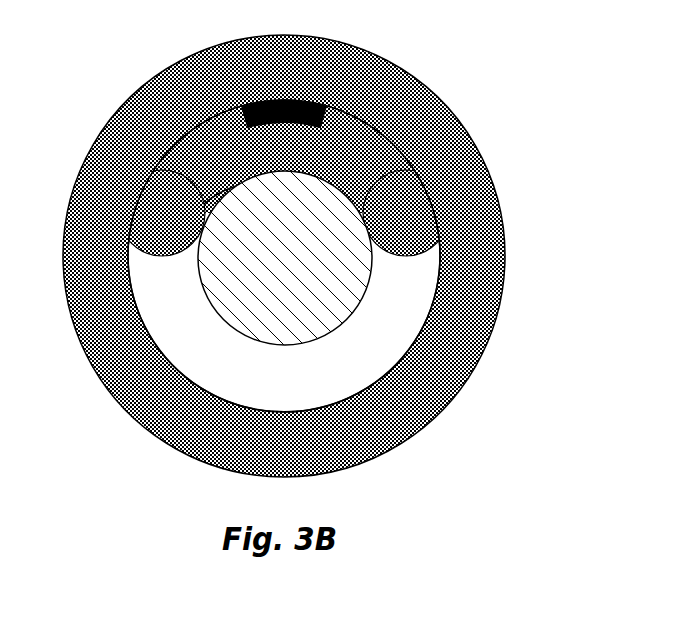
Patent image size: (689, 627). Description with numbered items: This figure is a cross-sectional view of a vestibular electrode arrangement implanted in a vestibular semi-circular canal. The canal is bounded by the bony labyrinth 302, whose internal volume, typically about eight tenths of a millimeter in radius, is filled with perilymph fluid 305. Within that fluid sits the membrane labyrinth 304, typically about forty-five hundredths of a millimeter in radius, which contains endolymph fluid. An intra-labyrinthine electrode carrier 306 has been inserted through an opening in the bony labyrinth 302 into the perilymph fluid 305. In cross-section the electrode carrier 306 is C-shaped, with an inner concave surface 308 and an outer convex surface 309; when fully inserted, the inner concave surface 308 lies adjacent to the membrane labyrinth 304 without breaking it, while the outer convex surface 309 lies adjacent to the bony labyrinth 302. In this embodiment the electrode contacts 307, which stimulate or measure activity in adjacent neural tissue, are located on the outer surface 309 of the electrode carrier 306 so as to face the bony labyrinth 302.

The bony labyrinth 302 is at (310, 251).
The membrane labyrinth 304 is at (333, 295).
The perilymph fluid 305 is at (372, 368).
The intra-labyrinthine electrode carrier 306 is at (410, 212).
The electrode contacts 307 is at (230, 108).
The inner concave surface 308 is at (212, 190).
The outer convex surface 309 is at (392, 149).